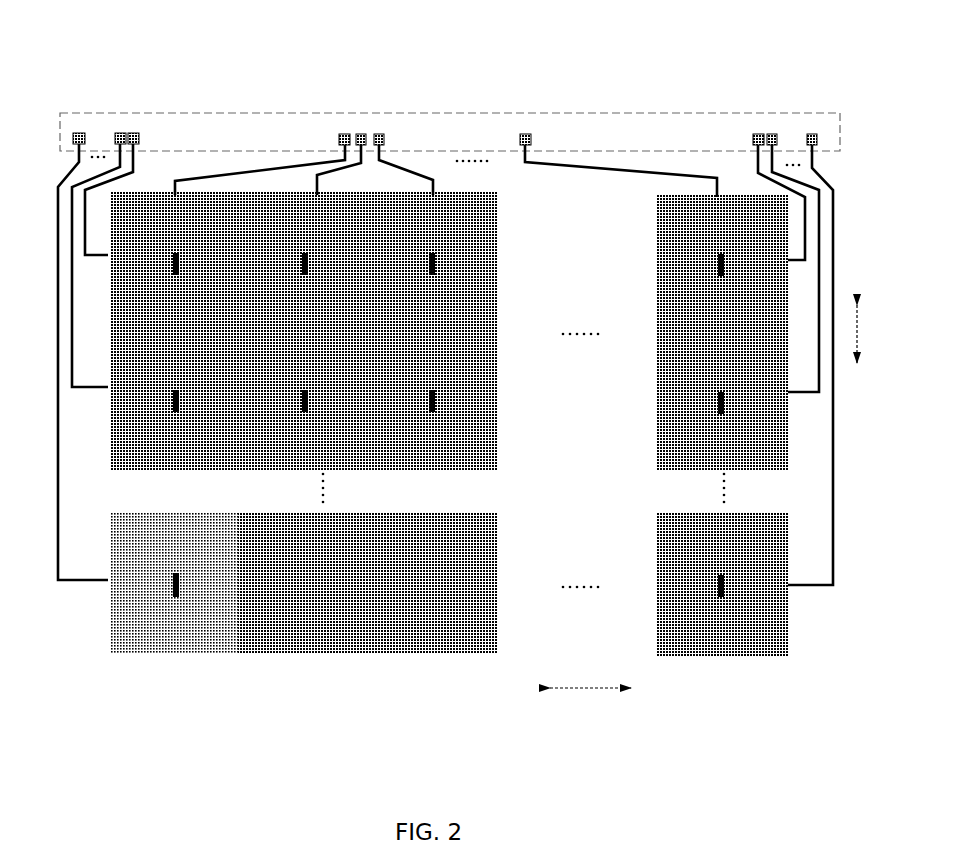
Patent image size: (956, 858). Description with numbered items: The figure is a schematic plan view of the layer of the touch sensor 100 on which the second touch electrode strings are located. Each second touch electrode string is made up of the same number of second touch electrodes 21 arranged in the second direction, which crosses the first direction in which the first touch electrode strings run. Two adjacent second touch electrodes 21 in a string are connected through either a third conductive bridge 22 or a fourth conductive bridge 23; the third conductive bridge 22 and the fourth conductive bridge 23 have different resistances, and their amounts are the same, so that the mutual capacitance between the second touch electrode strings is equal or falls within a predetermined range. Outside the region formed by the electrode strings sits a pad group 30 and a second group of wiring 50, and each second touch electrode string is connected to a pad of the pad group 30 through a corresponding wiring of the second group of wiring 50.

The touch sensor 100 is at (401, 38).
The pad group 30 is at (168, 113).
The second group of wiring 50 is at (574, 165).
The second touch electrode 21 is at (433, 623).
The third conductive bridge 22 is at (175, 597).
The fourth conductive bridge 23 is at (300, 593).